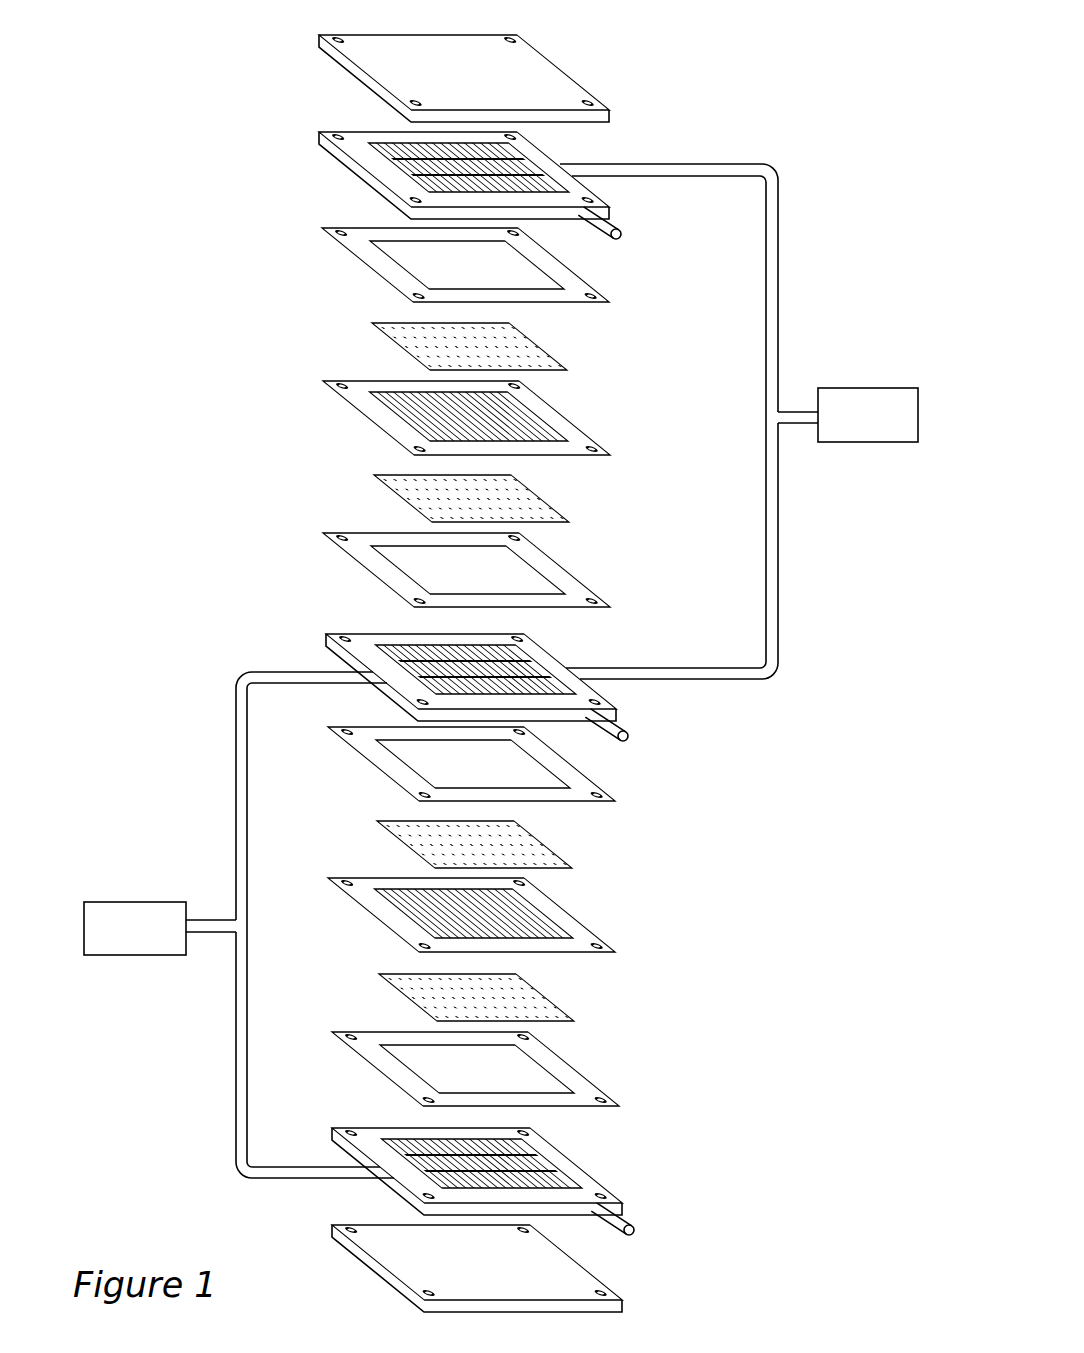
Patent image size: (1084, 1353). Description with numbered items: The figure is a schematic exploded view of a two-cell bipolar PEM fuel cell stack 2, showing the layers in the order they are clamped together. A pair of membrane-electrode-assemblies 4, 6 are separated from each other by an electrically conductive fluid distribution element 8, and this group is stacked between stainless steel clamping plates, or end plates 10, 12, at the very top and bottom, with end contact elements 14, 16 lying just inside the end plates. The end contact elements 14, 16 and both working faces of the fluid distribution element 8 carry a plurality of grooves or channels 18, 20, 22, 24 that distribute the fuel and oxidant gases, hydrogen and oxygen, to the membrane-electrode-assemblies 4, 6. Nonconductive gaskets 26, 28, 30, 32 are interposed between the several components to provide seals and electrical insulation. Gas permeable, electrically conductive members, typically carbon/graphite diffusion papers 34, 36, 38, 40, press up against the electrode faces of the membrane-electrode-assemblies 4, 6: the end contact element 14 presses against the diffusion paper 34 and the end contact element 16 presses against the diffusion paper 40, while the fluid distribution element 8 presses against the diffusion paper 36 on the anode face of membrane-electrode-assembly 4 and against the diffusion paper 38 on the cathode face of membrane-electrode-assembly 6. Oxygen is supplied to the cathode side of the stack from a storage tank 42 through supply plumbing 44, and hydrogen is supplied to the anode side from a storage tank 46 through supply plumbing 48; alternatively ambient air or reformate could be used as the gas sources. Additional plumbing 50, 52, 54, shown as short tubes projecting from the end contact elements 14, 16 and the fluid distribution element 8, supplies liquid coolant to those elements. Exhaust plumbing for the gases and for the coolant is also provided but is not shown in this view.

The bipolar fuel cell stack 2 is at (501, 673).
The membrane-electrode-assembly 4 is at (366, 417).
The membrane-electrode-assembly 6 is at (586, 925).
The electrically conductive fluid distribution element 8 is at (495, 689).
The end plate 10 is at (360, 74).
The end plate 12 is at (608, 1277).
The end contact element 14 is at (464, 168).
The end contact element 16 is at (544, 1167).
The grooves or channels 18 is at (527, 167).
The grooves or channels 20 is at (400, 652).
The grooves or channels 22 is at (567, 720).
The grooves or channels 24 is at (548, 1157).
The nonconductive gasket 26 is at (362, 257).
The nonconductive gasket 28 is at (365, 570).
The nonconductive gasket 30 is at (610, 797).
The nonconductive gasket 32 is at (575, 1068).
The carbon/graphite diffusion paper 34 is at (385, 337).
The carbon/graphite diffusion paper 36 is at (388, 493).
The carbon/graphite diffusion paper 38 is at (560, 848).
The carbon/graphite diffusion paper 40 is at (560, 992).
The storage tank 42 is at (867, 387).
The supply plumbing 44 is at (778, 582).
The storage tank 46 is at (103, 903).
The supply plumbing 48 is at (242, 717).
The plumbing 50 is at (617, 230).
The plumbing 52 is at (623, 730).
The plumbing 54 is at (632, 1227).